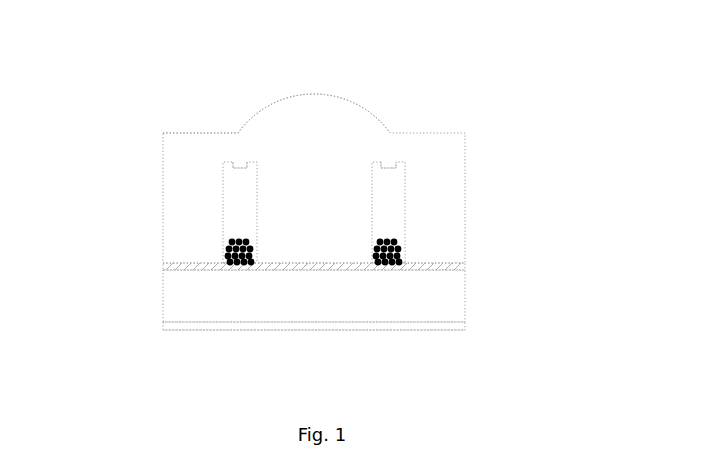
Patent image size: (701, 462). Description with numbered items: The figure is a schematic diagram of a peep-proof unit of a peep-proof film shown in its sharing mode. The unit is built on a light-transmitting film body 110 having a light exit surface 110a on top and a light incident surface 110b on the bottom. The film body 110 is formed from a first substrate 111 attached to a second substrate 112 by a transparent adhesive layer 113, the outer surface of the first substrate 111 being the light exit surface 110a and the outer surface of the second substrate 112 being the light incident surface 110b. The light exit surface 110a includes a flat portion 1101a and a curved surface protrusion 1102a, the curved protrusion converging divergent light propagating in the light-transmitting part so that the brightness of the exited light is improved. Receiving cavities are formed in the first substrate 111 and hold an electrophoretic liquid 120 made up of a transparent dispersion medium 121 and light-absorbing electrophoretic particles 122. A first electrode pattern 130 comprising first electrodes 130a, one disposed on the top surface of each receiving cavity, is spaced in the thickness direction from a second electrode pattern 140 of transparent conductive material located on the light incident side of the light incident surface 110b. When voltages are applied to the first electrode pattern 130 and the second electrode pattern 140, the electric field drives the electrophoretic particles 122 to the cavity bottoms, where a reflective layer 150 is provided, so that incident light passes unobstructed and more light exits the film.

The light-transmitting film body 110 is at (563, 312).
The first substrate 111 is at (452, 222).
The second substrate 112 is at (448, 297).
The transparent adhesive layer 113 is at (450, 266).
The light exit surface 110a is at (288, 36).
The light-transmitting part surface 1101a is at (203, 133).
The curved surface protrusion 1102a is at (313, 94).
The light incident surface 110b is at (280, 330).
The electrophoretic liquid 120 is at (76, 190).
The dispersion medium 121 is at (232, 200).
The electrophoretic particles 122 is at (226, 243).
The first electrode pattern 130 is at (493, 57).
The first electrode 130a is at (241, 164).
The second electrode pattern 140 is at (358, 327).
The reflective layer 150 is at (236, 269).